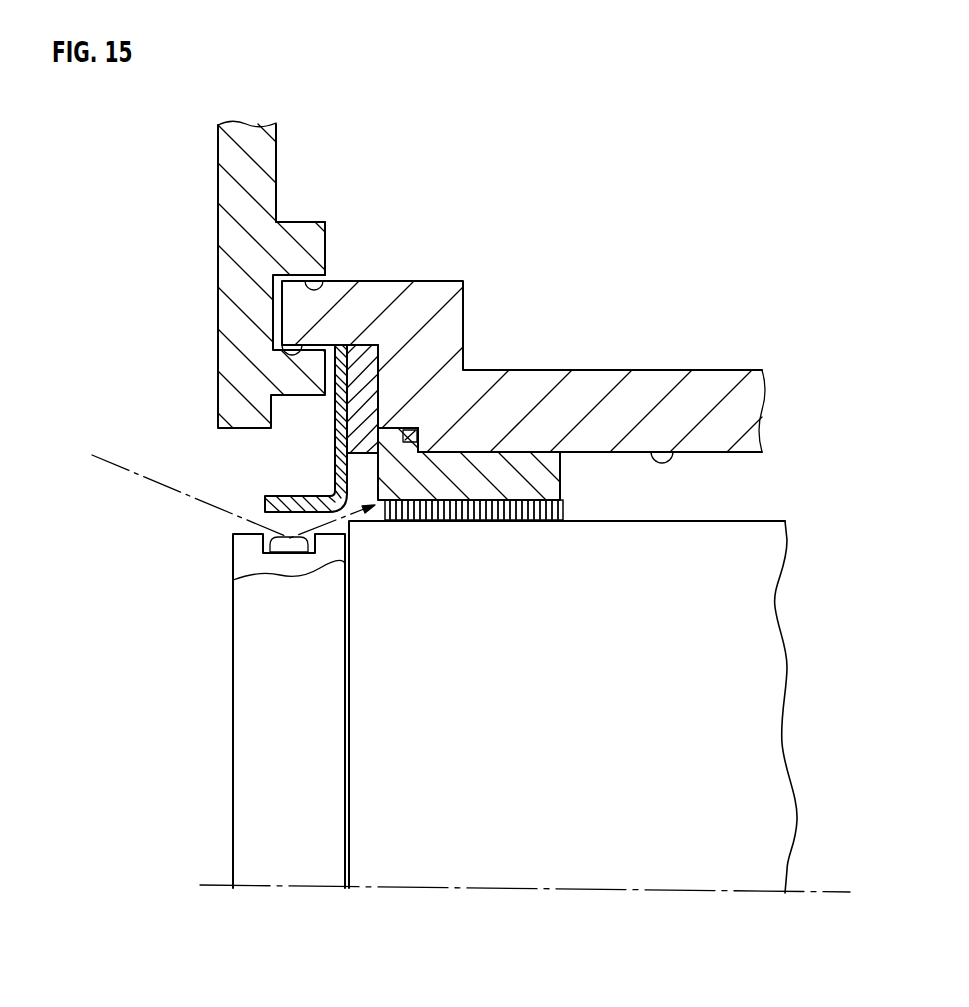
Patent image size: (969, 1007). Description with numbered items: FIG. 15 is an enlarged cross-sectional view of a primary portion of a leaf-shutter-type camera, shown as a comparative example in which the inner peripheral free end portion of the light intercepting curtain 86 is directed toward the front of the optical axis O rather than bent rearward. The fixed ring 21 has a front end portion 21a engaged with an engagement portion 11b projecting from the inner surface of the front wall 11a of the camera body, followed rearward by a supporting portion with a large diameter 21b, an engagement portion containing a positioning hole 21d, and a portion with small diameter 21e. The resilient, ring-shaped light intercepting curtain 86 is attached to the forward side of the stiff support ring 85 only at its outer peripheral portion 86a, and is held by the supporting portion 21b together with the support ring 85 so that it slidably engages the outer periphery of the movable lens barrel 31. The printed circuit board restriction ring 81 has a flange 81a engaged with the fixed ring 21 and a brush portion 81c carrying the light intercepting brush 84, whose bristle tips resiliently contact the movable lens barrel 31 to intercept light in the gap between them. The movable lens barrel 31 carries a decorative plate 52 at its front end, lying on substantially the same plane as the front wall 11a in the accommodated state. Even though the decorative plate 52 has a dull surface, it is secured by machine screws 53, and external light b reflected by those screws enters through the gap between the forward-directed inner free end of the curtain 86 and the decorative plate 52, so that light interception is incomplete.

The front wall 11a is at (216, 168).
The engagement portion 11b is at (330, 278).
The fixed ring 21 is at (662, 370).
The front end portion 21a is at (292, 312).
The supporting portion with a large diameter 21b is at (268, 353).
The positioning hole 21d is at (417, 430).
The portion with small diameter 21e is at (665, 452).
The support ring 85 is at (368, 357).
The light intercepting curtain 86 is at (332, 464).
The outer peripheral portion 86a is at (332, 427).
The printed circuit board restriction ring 81 is at (443, 453).
The flange 81a is at (395, 430).
The brush portion 81c is at (563, 505).
The light intercepting brush 84 is at (530, 521).
The movable lens barrel 31 is at (442, 873).
The decorative plate 52 is at (315, 875).
The machine screws 53 is at (292, 550).
The optical axis O is at (638, 892).
The external light b is at (160, 487).